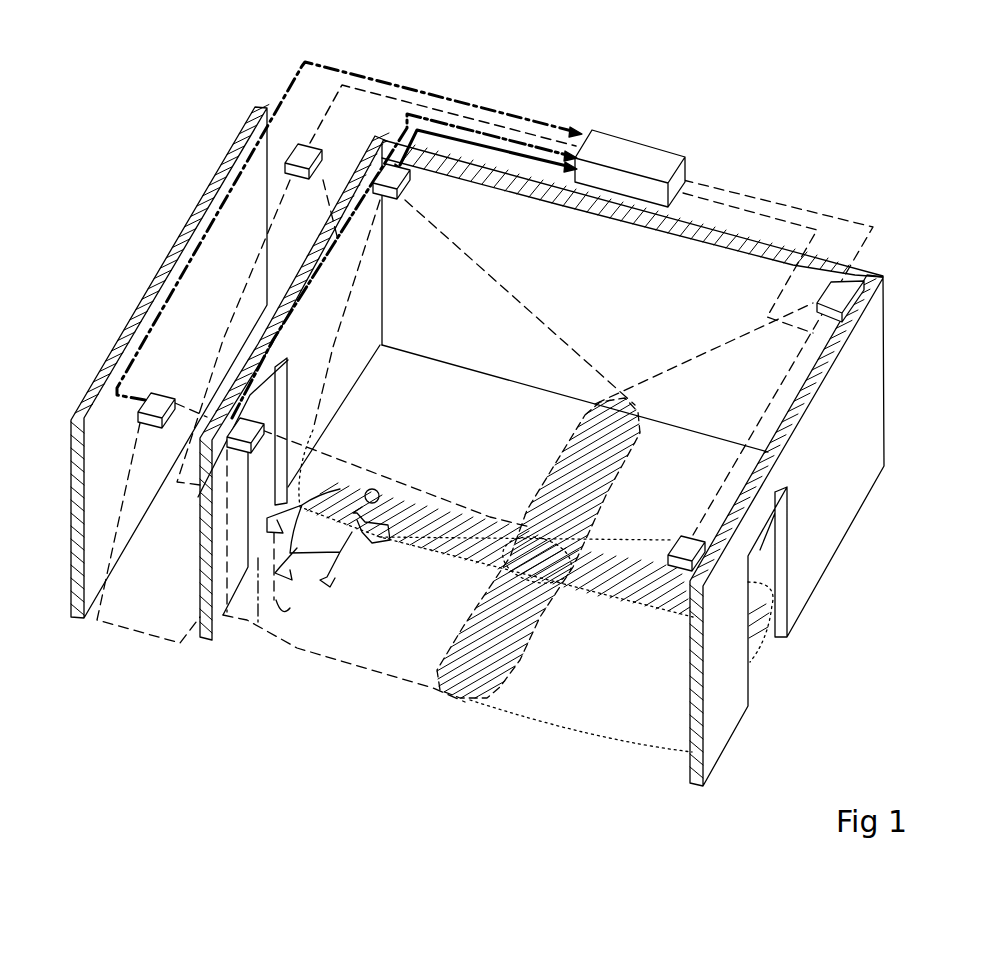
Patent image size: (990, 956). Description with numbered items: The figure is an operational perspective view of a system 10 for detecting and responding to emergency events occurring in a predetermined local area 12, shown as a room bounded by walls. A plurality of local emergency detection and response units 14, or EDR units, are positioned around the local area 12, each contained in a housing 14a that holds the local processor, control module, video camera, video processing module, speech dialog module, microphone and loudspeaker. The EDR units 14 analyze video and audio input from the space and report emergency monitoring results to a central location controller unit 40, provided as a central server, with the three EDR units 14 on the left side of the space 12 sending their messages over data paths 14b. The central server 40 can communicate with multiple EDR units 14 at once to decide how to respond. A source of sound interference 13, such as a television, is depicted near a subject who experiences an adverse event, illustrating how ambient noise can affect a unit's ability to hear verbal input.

The system 10 is at (789, 112).
The predetermined local area 12 is at (322, 606).
The source of sound interference 13 is at (243, 608).
The local emergency detection and response unit 14 is at (396, 171).
The housing 14a is at (840, 288).
The data paths 14b is at (533, 137).
The central location controller unit 40 is at (650, 138).